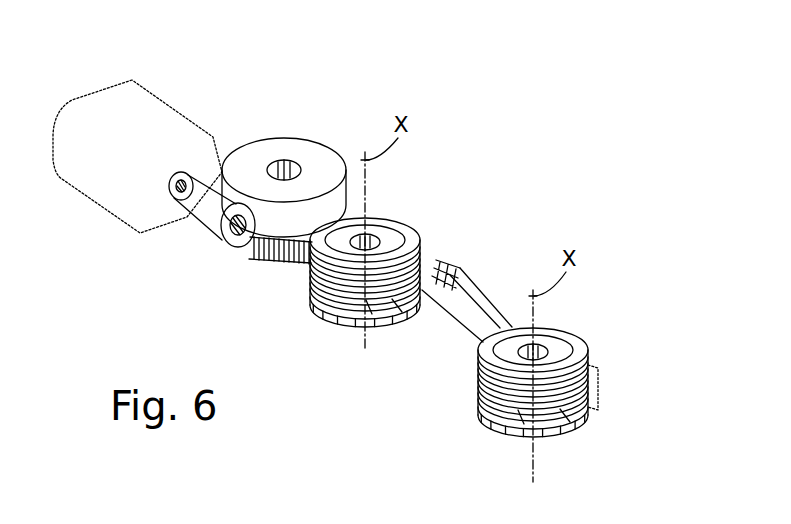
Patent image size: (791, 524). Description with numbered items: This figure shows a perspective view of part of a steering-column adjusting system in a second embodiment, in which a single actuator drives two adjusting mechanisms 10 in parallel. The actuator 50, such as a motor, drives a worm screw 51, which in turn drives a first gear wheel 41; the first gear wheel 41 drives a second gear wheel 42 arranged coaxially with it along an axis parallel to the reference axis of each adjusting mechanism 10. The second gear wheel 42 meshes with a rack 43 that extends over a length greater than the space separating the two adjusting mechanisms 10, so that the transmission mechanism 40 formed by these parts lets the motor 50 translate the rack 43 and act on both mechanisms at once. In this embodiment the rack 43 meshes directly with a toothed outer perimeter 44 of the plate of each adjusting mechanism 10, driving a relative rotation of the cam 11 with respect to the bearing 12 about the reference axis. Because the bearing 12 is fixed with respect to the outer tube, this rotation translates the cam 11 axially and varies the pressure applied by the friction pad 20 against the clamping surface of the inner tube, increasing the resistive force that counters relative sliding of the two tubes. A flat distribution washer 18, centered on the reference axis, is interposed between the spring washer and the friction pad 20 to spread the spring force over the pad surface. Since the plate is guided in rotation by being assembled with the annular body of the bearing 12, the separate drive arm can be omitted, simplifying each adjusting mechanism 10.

The adjusting mechanism 10 is at (406, 212).
The cam 11 is at (395, 301).
The bearing 12 is at (413, 247).
The flat distribution washer 18 is at (563, 423).
The friction pad 20 is at (333, 322).
The transmission mechanism 40 is at (310, 104).
The first gear wheel 41 is at (268, 150).
The second gear wheel 42 is at (277, 252).
The rack 43 is at (440, 270).
The toothed outer perimeter 44 is at (370, 303).
The actuator 50 is at (122, 105).
The worm screw 51 is at (205, 213).